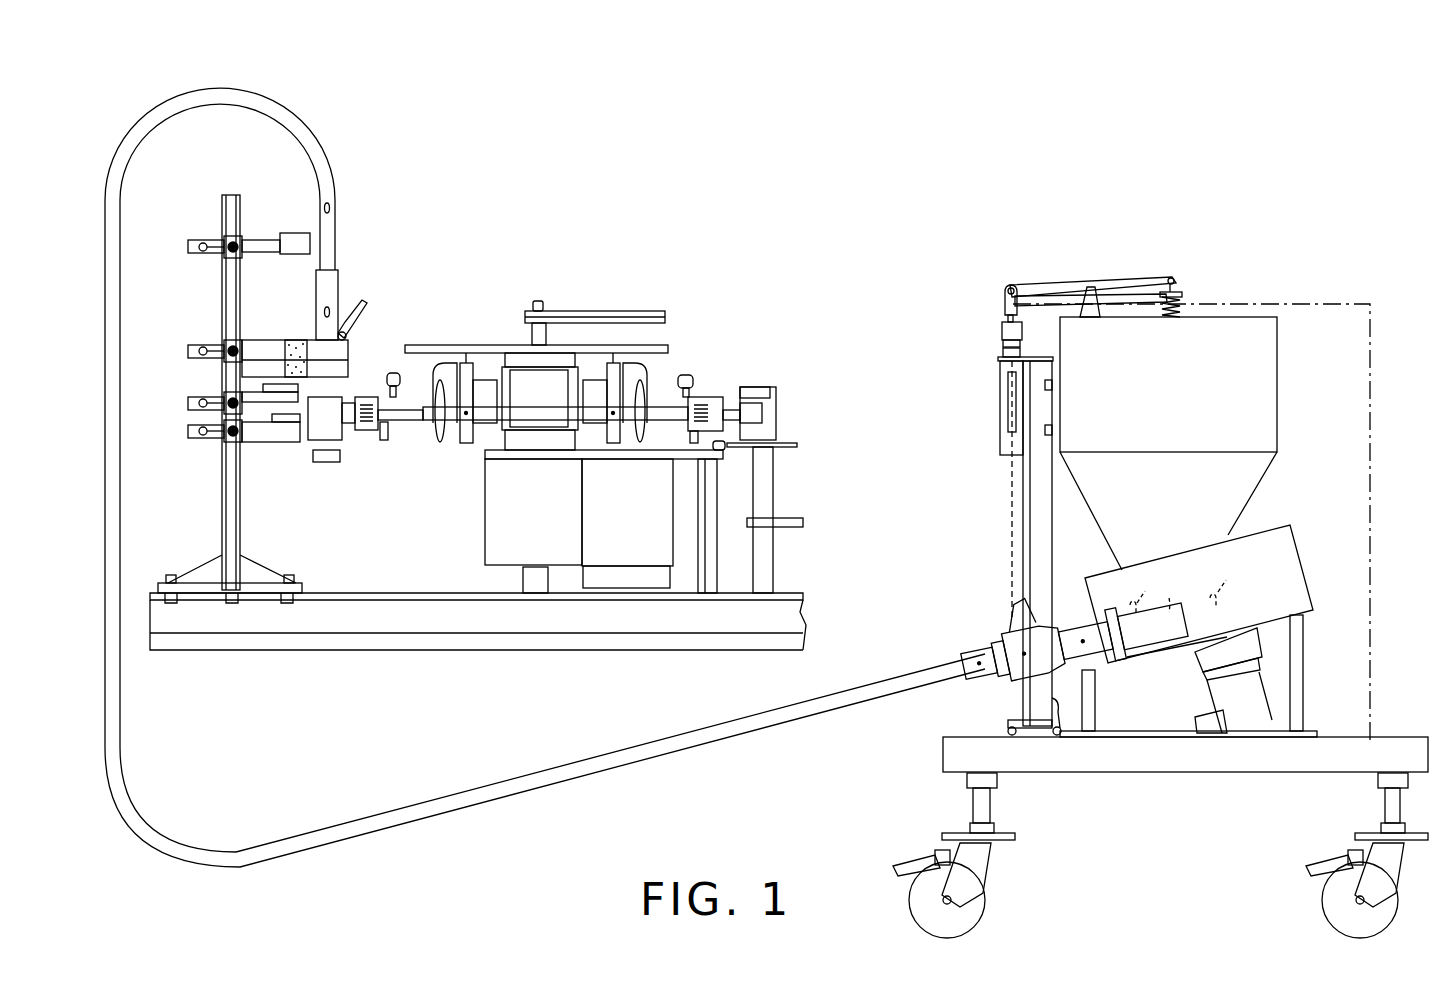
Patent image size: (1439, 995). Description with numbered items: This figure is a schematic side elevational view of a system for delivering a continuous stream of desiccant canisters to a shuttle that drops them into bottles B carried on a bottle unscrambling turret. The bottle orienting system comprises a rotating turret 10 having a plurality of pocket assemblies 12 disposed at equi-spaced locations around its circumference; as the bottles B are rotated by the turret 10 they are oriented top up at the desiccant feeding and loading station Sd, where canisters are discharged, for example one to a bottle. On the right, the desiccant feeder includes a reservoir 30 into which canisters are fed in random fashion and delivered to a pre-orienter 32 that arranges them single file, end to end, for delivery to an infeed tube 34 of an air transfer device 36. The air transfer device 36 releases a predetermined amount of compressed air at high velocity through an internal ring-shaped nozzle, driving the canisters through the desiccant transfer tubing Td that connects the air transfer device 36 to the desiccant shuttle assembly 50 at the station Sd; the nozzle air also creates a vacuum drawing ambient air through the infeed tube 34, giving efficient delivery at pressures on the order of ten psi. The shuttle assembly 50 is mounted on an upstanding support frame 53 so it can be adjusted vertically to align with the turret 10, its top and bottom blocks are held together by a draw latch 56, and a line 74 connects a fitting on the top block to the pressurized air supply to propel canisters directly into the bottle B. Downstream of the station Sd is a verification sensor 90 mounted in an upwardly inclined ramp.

The rotating turret 10 is at (670, 345).
The pocket assemblies 12 is at (708, 397).
The reservoir 30 is at (1318, 396).
The pre-orienter 32 is at (1323, 504).
The infeed tube 34 is at (1147, 612).
The air transfer device 36 is at (1012, 622).
The desiccant shuttle assembly 50 is at (263, 341).
The upstanding support frame 53 is at (225, 196).
The draw latch 56 is at (297, 340).
The line 74 is at (363, 300).
The verification sensor 90 is at (340, 462).
The bottle B is at (312, 442).
The desiccant feeding and loading station Sd is at (358, 394).
The desiccant transfer tubing Td is at (598, 770).